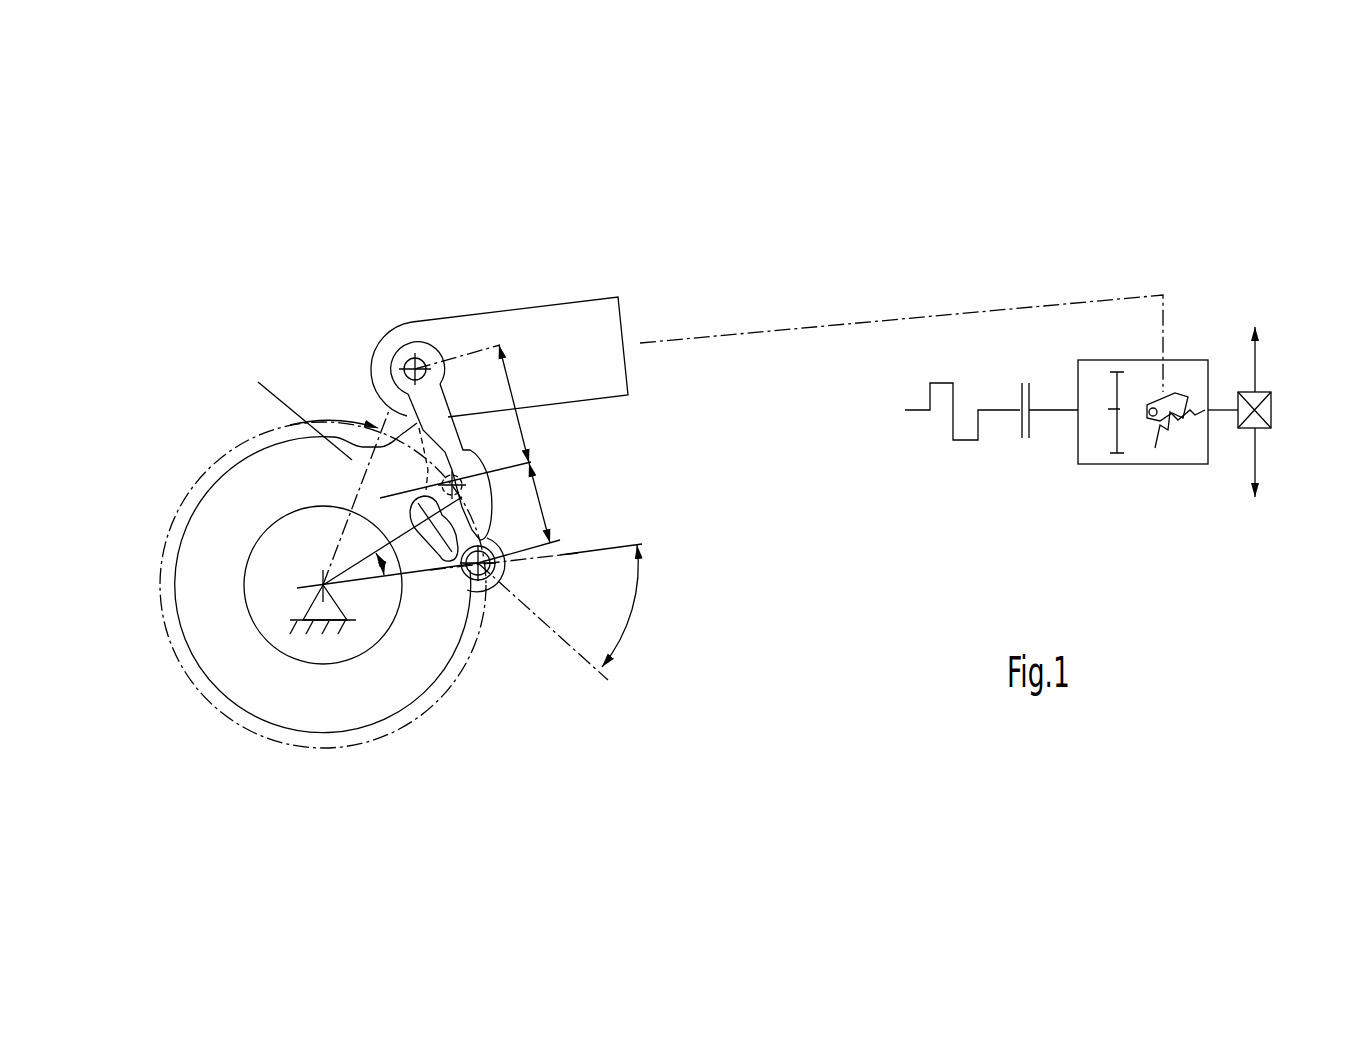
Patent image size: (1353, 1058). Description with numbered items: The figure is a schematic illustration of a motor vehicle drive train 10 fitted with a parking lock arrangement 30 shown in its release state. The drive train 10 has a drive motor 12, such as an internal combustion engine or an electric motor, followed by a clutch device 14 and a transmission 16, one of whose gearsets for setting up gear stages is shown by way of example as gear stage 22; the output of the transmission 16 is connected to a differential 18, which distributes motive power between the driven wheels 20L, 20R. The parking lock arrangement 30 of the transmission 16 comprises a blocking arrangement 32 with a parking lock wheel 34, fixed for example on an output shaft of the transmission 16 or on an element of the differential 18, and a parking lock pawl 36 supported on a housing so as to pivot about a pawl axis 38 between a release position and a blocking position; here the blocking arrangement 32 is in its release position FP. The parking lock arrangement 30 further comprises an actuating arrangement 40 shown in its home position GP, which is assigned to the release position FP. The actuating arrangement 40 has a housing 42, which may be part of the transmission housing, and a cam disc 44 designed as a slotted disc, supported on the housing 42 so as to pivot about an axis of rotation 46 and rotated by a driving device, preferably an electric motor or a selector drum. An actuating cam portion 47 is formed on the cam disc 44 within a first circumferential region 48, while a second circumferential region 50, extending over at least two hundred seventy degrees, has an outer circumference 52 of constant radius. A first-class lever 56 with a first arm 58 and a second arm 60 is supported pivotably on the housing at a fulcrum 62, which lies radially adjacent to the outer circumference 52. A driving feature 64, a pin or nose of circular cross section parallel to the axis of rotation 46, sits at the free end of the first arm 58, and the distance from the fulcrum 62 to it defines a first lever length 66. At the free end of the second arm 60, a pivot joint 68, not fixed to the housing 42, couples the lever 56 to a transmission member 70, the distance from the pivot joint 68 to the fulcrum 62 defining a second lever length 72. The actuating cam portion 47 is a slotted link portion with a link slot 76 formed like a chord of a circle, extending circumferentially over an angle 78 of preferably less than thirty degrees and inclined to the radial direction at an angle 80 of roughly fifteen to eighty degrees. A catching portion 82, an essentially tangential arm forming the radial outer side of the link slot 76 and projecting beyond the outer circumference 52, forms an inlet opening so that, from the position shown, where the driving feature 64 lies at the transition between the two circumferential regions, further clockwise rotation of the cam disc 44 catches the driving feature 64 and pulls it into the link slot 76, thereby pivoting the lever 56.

The drive train 10 is at (1148, 210).
The drive motor 12 is at (952, 420).
The clutch device 14 is at (1030, 425).
The transmission 16 is at (1112, 468).
The differential 18 is at (1273, 402).
The driven wheel 20R is at (1258, 370).
The driven wheel 20L is at (1257, 453).
The gear stage 22 is at (1122, 413).
The parking lock arrangement 30 is at (1095, 272).
The blocking arrangement 32 is at (1183, 387).
The parking lock wheel 34 is at (1178, 433).
The parking lock pawl 36 is at (1170, 388).
The pawl axis 38 is at (1150, 408).
The actuating arrangement 40 is at (441, 250).
The housing 42 is at (328, 635).
The cam disc 44 is at (322, 742).
The axis of rotation 46 is at (323, 585).
The actuating cam portion 47 is at (547, 437).
The first circumferential region 48 is at (600, 472).
The second circumferential region 50 is at (223, 456).
The outer circumference 52 is at (255, 720).
The lever 56 is at (432, 342).
The first arm 58 is at (497, 548).
The second arm 60 is at (435, 410).
The fulcrum 62 is at (463, 450).
The driving feature 64 is at (485, 588).
The first lever length 66 is at (558, 512).
The pivot joint 68 is at (402, 368).
The transmission member 70 is at (570, 323).
The second lever length 72 is at (510, 397).
The link slot 76 is at (461, 578).
The angle 78 is at (420, 553).
The angle 80 is at (633, 610).
The catching portion 82 is at (537, 497).
The home position GP is at (398, 282).
The release position FP is at (1160, 280).